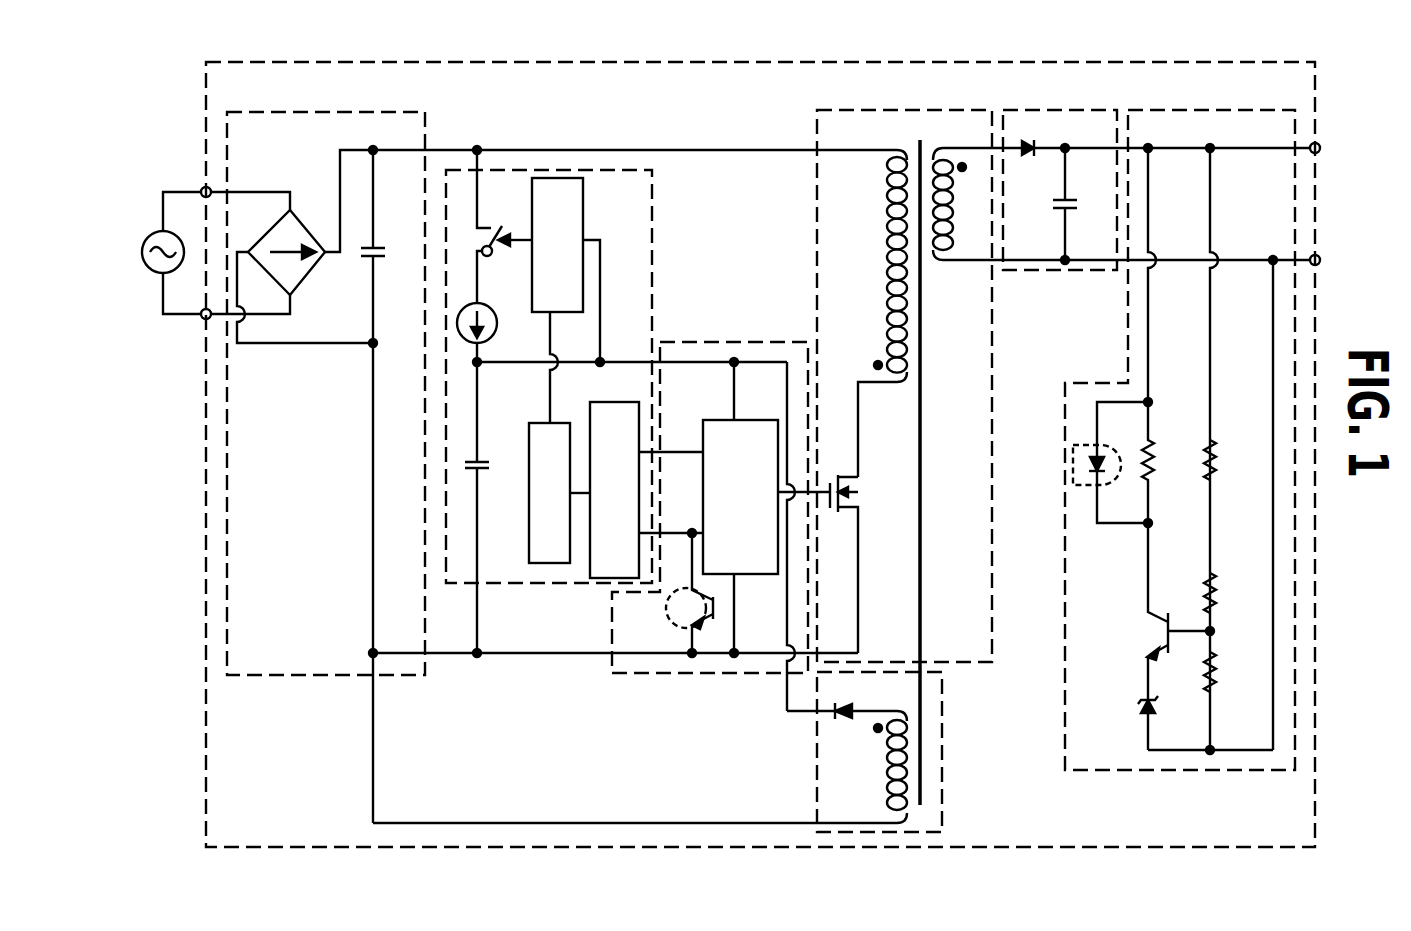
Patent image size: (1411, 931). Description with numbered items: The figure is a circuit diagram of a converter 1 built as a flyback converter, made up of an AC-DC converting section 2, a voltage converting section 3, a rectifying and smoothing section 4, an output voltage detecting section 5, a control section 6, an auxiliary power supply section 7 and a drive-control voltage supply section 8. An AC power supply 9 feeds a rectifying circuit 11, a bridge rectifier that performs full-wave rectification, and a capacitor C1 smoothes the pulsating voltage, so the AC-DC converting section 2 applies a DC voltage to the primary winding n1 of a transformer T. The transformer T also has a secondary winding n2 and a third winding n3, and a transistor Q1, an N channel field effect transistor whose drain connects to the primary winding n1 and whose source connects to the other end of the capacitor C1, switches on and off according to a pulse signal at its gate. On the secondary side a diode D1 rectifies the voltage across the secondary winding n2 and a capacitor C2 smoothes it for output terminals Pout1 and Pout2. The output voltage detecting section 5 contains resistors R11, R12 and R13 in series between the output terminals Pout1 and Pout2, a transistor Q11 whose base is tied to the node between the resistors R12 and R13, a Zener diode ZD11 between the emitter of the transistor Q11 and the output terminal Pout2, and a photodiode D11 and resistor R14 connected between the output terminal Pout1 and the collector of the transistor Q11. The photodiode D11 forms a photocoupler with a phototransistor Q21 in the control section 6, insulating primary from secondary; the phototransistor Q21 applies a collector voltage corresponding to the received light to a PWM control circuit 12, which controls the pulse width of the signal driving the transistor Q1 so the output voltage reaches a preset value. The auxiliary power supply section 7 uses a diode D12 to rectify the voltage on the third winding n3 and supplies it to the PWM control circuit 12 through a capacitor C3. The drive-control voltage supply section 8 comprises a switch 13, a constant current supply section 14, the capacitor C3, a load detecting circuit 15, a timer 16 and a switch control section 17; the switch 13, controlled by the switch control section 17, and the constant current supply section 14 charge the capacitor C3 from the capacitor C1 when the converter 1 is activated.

The converter 1 is at (1317, 98).
The AC-DC converting section 2 is at (318, 447).
The voltage converting section 3 is at (1063, 437).
The rectifying and smoothing section 4 is at (1156, 168).
The output voltage detecting section 5 is at (1180, 418).
The control section 6 is at (721, 505).
The auxiliary power supply section 7 is at (883, 752).
The drive-control voltage supply section 8 is at (616, 401).
The AC power supply 9 is at (150, 237).
The rectifying circuit 11 is at (298, 222).
The PWM control circuit 12 is at (745, 420).
The switch 13 is at (492, 223).
The constant current supply section 14 is at (491, 306).
The load detecting circuit 15 is at (605, 402).
The timer 16 is at (558, 423).
The switch control section 17 is at (585, 222).
The transformer T is at (915, 130).
The primary winding n1 is at (882, 300).
The secondary winding n2 is at (1121, 192).
The third winding n3 is at (890, 747).
The transistor Q1 is at (863, 564).
The phototransistor Q21 is at (666, 595).
The transistor Q11 is at (1159, 611).
The capacitor C1 is at (385, 484).
The capacitor C2 is at (1081, 204).
The capacitor C3 is at (492, 507).
The diode D1 is at (1162, 136).
The photodiode D11 is at (1110, 462).
The diode D12 is at (847, 699).
The resistor R11 is at (1232, 460).
The resistor R12 is at (1232, 593).
The resistor R13 is at (1232, 672).
The resistor R14 is at (1169, 462).
The Zener diode ZD11 is at (1124, 723).
The output terminal Pout1 is at (1351, 148).
The output terminal Pout2 is at (1351, 260).